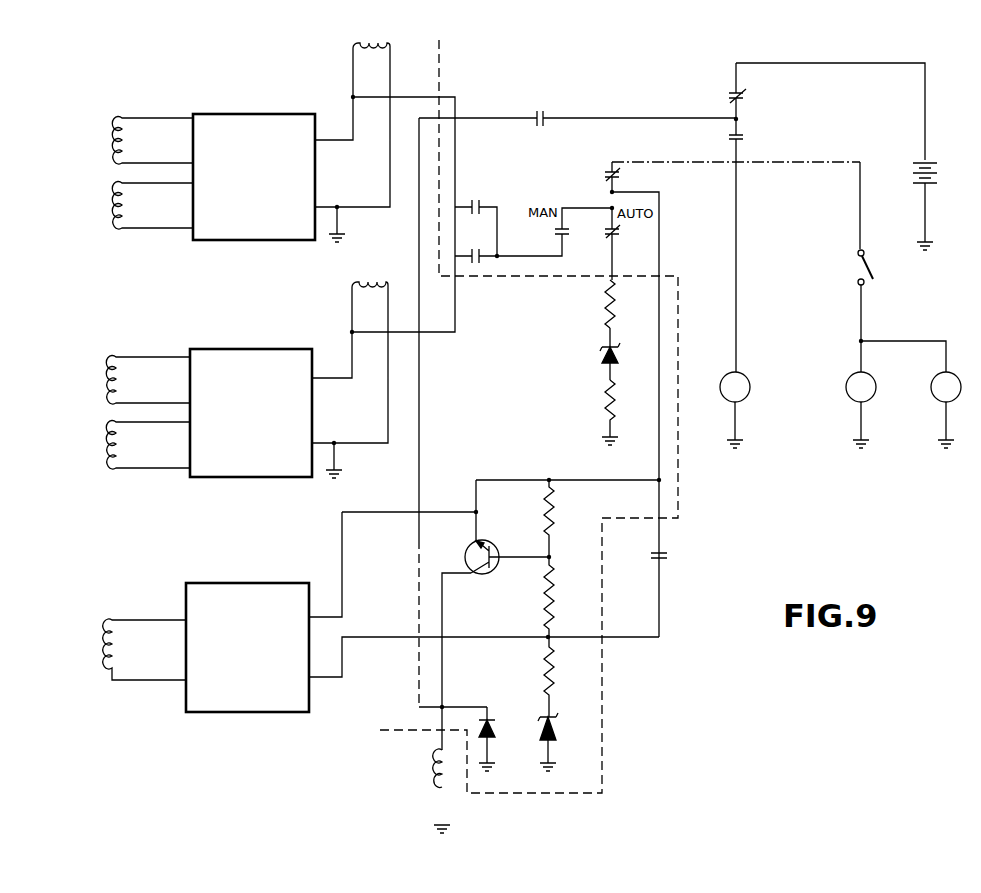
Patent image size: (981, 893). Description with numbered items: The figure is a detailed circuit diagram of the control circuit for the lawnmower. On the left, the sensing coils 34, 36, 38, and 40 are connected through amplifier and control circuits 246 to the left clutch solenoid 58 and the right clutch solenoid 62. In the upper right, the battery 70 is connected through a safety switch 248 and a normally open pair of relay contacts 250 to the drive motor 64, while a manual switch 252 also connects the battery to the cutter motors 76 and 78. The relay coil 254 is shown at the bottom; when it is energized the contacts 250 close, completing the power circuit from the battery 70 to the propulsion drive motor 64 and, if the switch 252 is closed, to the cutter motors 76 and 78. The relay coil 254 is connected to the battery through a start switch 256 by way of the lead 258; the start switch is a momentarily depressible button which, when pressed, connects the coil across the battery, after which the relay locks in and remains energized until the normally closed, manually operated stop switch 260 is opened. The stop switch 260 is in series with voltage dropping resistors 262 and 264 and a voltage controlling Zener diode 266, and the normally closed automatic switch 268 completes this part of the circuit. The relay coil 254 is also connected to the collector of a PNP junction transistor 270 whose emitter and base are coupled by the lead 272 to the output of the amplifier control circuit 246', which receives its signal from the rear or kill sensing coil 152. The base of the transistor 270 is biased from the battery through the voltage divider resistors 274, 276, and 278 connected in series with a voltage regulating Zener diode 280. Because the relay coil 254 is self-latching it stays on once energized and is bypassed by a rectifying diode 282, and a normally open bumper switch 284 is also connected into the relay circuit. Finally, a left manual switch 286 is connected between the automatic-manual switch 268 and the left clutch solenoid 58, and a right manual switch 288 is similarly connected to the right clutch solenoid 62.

The amplifier and control circuit 246 is at (252, 281).
The amplifier control circuit 246' is at (247, 635).
The sensing coil 36 is at (114, 119).
The sensing coil 40 is at (114, 225).
The sensing coil 34 is at (110, 360).
The sensing coil 38 is at (108, 466).
The kill sensing coil 152 is at (109, 633).
The left clutch solenoid 58 is at (375, 43).
The right clutch solenoid 62 is at (372, 282).
The lead 272 is at (365, 512).
The lead 258 is at (499, 118).
The start switch 256 is at (544, 121).
The safety switch 248 is at (730, 91).
The relay contacts 250 is at (729, 138).
The battery 70 is at (940, 184).
The manual switch 252 is at (872, 276).
The drive motor 64 is at (738, 372).
The cutter motor 78 is at (856, 374).
The cutter motor 76 is at (938, 377).
The stop switch 260 is at (605, 175).
The automatic switch 268 is at (614, 236).
The left manual switch 286 is at (482, 205).
The right manual switch 288 is at (480, 262).
The voltage dropping resistor 262 is at (607, 299).
The Zener diode 266 is at (604, 355).
The voltage dropping resistor 264 is at (605, 400).
The voltage divider resistor 274 is at (555, 512).
The voltage divider resistor 276 is at (553, 592).
The voltage divider resistor 278 is at (552, 680).
The Zener diode 280 is at (552, 731).
The rectifying diode 282 is at (490, 718).
The PNP junction transistor 270 is at (487, 541).
The bumper switch 284 is at (651, 553).
The relay coil 254 is at (434, 767).